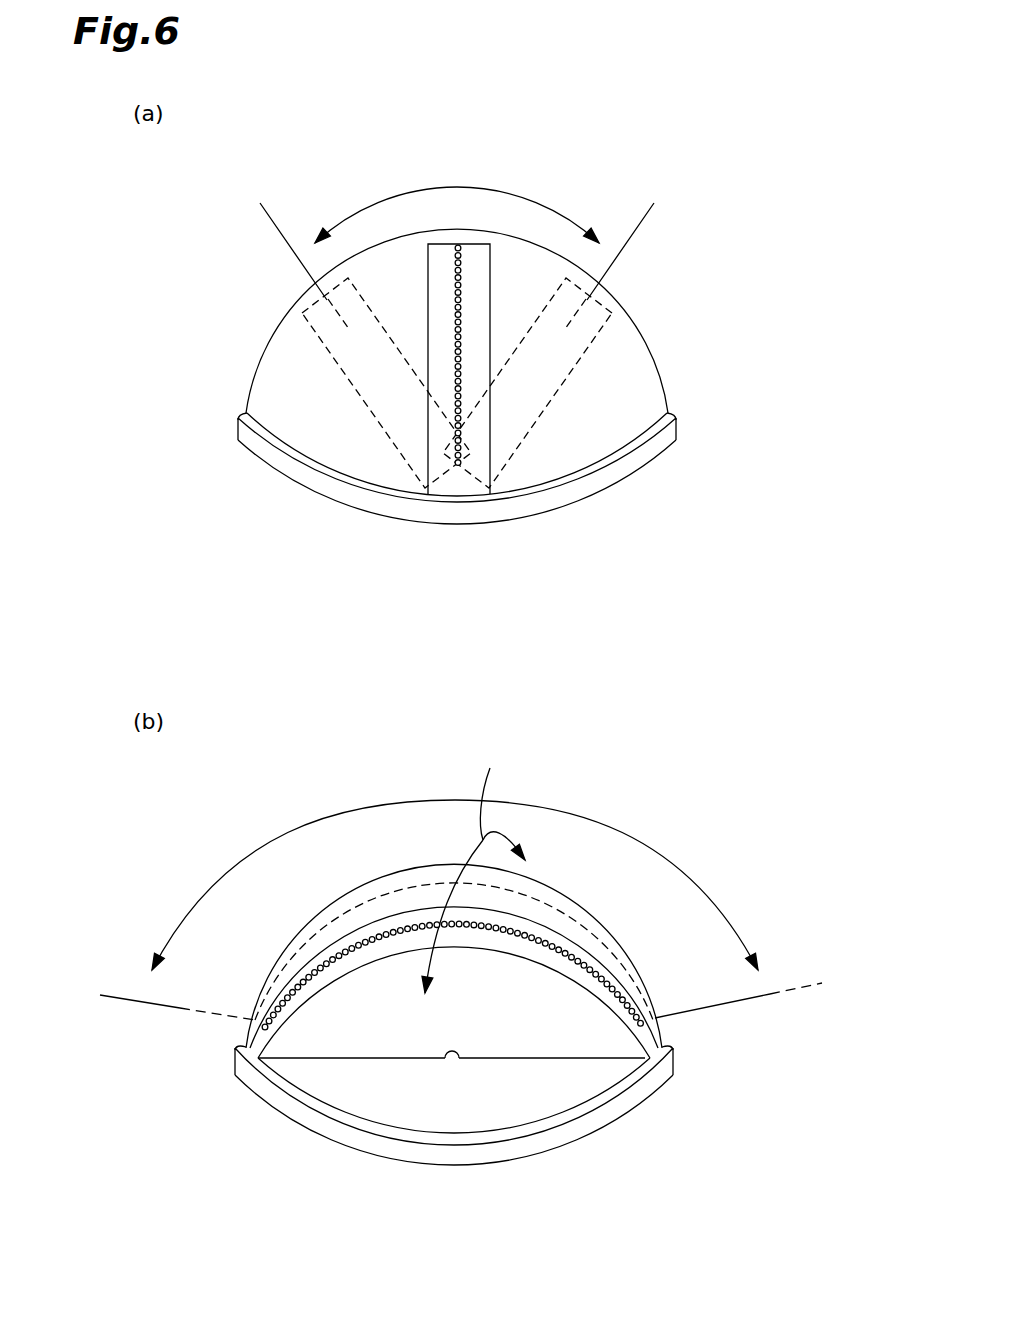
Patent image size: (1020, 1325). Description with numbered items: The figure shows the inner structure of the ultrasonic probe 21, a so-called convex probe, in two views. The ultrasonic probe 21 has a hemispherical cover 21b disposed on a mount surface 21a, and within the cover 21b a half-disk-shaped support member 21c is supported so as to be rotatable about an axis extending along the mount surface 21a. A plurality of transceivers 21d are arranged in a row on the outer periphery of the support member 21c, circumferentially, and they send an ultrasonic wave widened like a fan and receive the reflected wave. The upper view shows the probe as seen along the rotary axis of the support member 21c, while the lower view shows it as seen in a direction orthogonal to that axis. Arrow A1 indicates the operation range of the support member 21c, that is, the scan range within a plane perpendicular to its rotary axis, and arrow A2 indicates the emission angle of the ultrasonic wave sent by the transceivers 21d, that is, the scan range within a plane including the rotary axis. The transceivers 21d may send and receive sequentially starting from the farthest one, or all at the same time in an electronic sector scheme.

The ultrasonic probe 21 is at (630, 178).
The mount surface 21a is at (418, 1110).
The hemispherical cover 21b is at (648, 345).
The support member 21c is at (437, 368).
The transceivers 21d is at (463, 473).
The arrow A1 is at (498, 189).
The arrow A2 is at (363, 807).